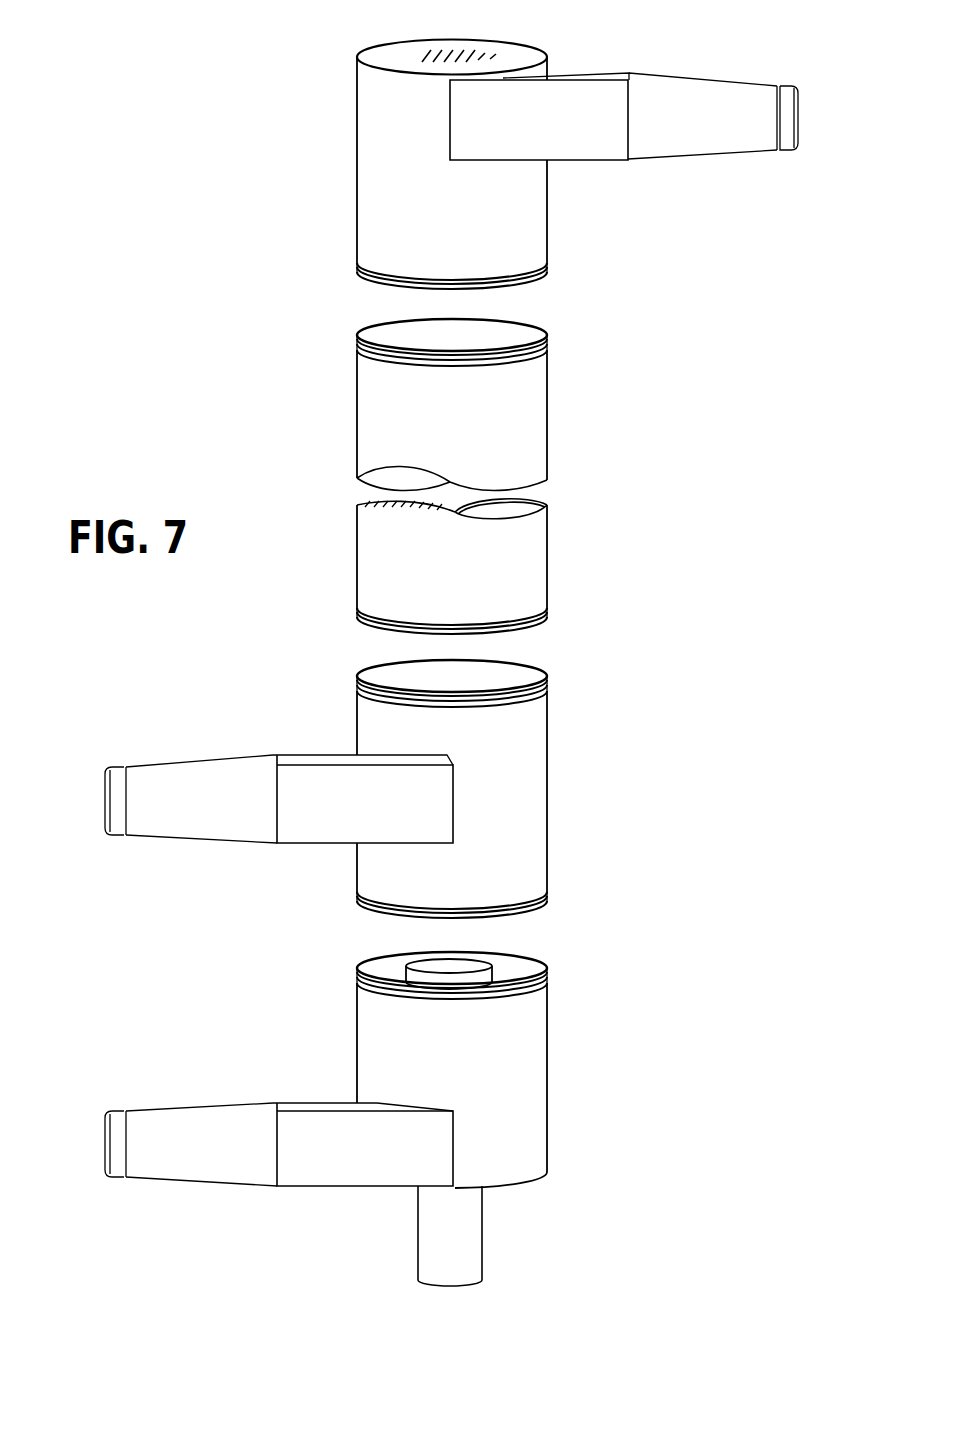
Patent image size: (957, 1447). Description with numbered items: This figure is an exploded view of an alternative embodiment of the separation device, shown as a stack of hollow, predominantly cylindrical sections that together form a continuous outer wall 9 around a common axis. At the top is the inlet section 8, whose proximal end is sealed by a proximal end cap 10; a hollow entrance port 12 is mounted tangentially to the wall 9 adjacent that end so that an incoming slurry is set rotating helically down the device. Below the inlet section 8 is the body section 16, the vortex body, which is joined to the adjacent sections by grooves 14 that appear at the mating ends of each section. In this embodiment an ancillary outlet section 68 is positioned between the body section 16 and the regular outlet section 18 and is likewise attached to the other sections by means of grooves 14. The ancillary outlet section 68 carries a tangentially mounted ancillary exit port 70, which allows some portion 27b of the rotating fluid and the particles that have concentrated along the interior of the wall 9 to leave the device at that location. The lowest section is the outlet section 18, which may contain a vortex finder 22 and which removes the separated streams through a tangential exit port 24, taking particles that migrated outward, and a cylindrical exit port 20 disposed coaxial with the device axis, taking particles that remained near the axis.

The inlet section 8 is at (577, 119).
The outer wall 9 is at (357, 208).
The proximal end cap 10 is at (515, 50).
The entrance port 12 is at (688, 78).
The groove 14 is at (549, 266).
The body section 16 is at (589, 417).
The outlet section 18 is at (390, 1105).
The cylindrical exit port 20 is at (483, 1237).
The vortex finder 22 is at (497, 963).
The tangential exit port 24 is at (212, 1105).
The portion of the fluid 27b is at (390, 810).
The ancillary outlet section 68 is at (389, 775).
The ancillary exit port 70 is at (245, 760).